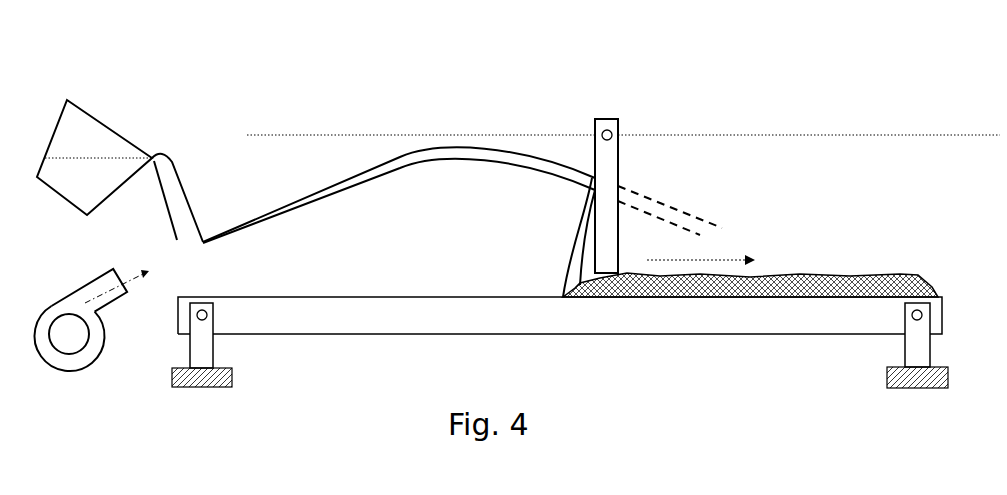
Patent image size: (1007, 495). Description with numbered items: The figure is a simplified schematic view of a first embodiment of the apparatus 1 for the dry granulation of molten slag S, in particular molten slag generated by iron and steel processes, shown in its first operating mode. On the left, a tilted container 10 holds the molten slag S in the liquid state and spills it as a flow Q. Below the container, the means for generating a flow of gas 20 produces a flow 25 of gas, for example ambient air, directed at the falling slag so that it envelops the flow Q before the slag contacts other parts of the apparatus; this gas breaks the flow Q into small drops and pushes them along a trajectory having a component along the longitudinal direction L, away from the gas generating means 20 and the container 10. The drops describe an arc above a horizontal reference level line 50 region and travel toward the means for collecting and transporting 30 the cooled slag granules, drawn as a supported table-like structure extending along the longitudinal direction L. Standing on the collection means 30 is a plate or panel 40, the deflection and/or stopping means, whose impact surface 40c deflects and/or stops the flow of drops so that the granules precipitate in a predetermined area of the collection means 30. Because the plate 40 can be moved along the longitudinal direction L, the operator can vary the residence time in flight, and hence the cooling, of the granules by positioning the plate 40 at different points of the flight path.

The apparatus 1 is at (753, 73).
The container 10 is at (108, 128).
The molten slag S is at (81, 180).
The flow of slag Q is at (173, 160).
The means for generating a flow of gas 20 is at (88, 368).
The flow of gas 25 is at (113, 288).
The means for collecting and transporting 30 is at (562, 335).
The plate or panel 40 is at (622, 190).
The impact surface 40c is at (585, 150).
The reference level line 50 is at (470, 133).
The longitudinal direction L is at (708, 247).